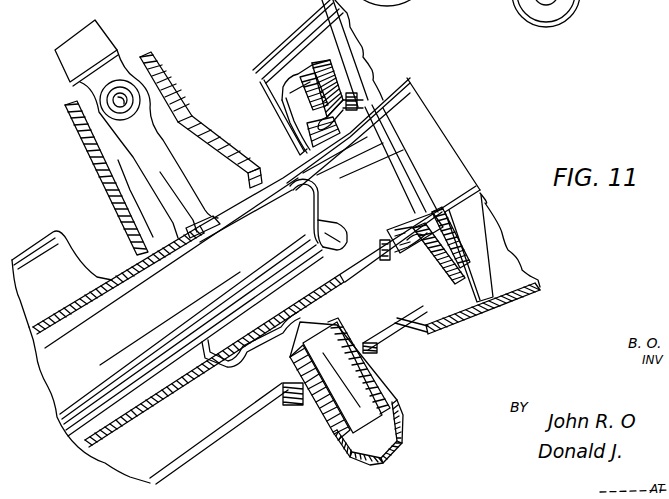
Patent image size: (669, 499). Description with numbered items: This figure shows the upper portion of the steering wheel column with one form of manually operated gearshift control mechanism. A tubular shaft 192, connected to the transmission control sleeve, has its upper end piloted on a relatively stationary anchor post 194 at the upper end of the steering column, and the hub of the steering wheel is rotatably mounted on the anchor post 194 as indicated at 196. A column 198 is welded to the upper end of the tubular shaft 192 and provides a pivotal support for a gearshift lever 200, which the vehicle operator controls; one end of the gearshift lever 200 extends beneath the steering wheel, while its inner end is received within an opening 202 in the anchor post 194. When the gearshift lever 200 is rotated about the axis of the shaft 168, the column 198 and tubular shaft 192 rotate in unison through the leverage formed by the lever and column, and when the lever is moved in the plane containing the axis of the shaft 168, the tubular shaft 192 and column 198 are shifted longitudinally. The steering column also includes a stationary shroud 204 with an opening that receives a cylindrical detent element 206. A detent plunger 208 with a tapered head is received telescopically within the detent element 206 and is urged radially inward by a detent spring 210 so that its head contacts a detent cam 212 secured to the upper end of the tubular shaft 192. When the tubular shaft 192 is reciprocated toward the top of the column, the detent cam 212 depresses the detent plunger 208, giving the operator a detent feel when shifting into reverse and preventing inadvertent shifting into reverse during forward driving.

The shaft 168 is at (297, 221).
The tubular shaft 192 is at (120, 260).
The anchor post 194 is at (284, 174).
The steering wheel hub mounting 196 is at (278, 42).
The column 198 is at (160, 73).
The gearshift lever 200 is at (97, 48).
The opening 202 is at (184, 237).
The stationary shroud 204 is at (397, 327).
The cylindrical detent element 206 is at (367, 377).
The detent plunger 208 is at (284, 386).
The detent spring 210 is at (366, 384).
The detent cam 212 is at (228, 355).